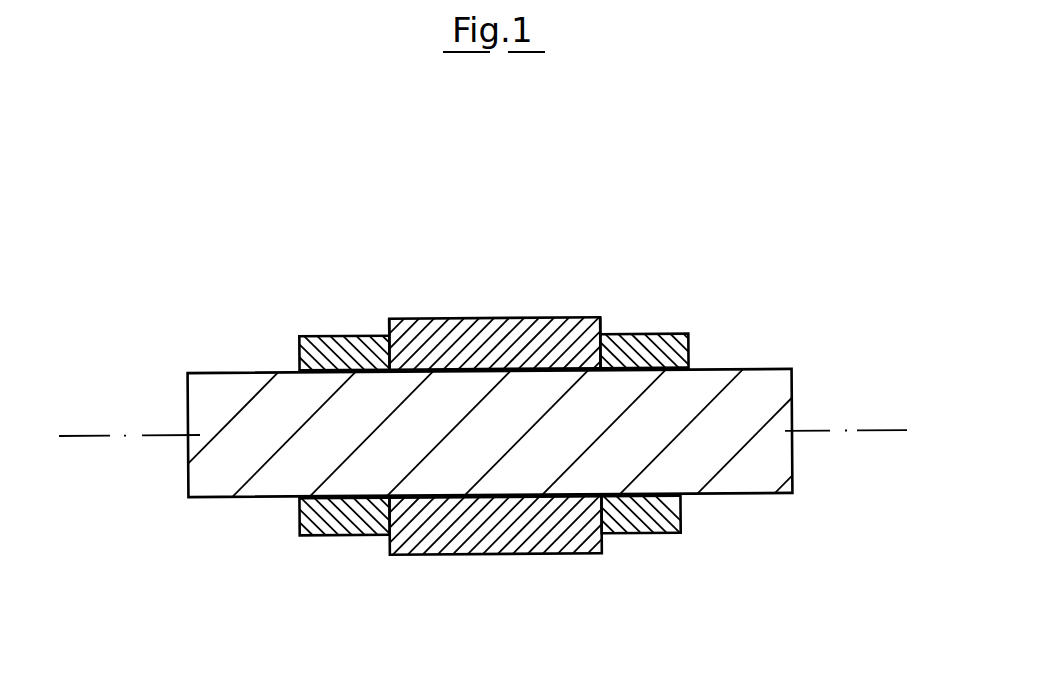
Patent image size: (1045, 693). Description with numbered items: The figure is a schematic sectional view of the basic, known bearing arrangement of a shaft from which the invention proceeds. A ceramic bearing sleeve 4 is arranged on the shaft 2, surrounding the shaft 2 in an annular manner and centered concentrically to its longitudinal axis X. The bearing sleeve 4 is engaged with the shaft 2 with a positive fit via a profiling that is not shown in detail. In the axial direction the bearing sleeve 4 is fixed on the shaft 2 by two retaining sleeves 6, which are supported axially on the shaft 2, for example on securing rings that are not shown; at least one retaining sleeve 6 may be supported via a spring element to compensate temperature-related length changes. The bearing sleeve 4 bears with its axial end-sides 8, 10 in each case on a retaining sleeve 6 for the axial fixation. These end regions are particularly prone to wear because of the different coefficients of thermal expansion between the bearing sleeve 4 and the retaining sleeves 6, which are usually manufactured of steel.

The shaft 2 is at (237, 388).
The bearing sleeve 4 is at (500, 338).
The retaining sleeve 6 is at (672, 333).
The axial end-side 8 is at (602, 333).
The axial end-side 10 is at (389, 322).
The longitudinal axis X is at (105, 437).